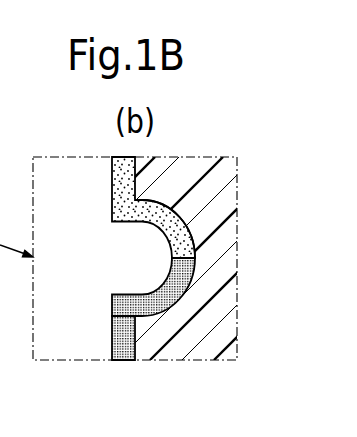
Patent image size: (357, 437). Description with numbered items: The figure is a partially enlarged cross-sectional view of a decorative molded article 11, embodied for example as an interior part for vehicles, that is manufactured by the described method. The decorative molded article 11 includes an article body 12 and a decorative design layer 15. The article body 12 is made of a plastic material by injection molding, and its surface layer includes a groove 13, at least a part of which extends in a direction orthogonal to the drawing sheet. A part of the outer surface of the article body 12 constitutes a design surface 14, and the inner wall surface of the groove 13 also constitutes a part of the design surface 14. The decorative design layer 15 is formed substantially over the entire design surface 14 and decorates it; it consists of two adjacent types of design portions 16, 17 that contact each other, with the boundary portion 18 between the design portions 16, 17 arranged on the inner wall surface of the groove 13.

The decorative molded article 11 is at (178, 235).
The article body 12 is at (235, 160).
The groove 13 is at (181, 224).
The design surface 14 is at (127, 362).
The decorative design layer 15 is at (120, 236).
The design portion 16 is at (141, 287).
The design portion 17 is at (112, 199).
The boundary portion 18 is at (196, 259).